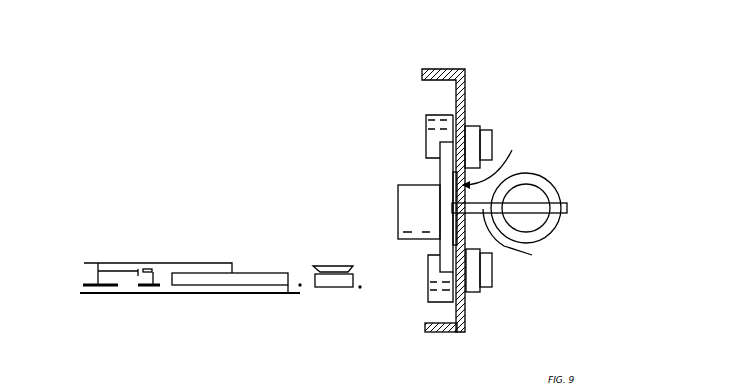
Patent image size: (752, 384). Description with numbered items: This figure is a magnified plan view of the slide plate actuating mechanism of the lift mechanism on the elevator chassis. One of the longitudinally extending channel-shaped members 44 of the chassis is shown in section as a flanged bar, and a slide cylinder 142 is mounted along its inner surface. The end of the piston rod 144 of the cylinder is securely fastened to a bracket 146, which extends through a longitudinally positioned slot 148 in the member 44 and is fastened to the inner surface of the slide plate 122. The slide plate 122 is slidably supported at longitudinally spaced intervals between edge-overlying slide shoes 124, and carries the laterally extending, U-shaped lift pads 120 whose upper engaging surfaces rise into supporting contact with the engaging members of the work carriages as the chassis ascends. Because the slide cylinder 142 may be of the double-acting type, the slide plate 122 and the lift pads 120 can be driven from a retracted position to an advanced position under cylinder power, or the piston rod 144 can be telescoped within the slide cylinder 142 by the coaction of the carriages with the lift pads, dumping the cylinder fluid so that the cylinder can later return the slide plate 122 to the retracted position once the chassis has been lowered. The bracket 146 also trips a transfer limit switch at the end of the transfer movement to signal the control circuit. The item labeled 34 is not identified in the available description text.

The channel member 34 is at (462, 68).
The channel-shaped member 44 is at (447, 333).
The lift pad 120 is at (398, 197).
The slide plate 122 is at (440, 162).
The slide shoes 124 is at (426, 117).
The slide cylinder 142 is at (520, 182).
The piston rod 144 is at (536, 197).
The bracket 146 is at (538, 244).
The slot 148 is at (514, 151).